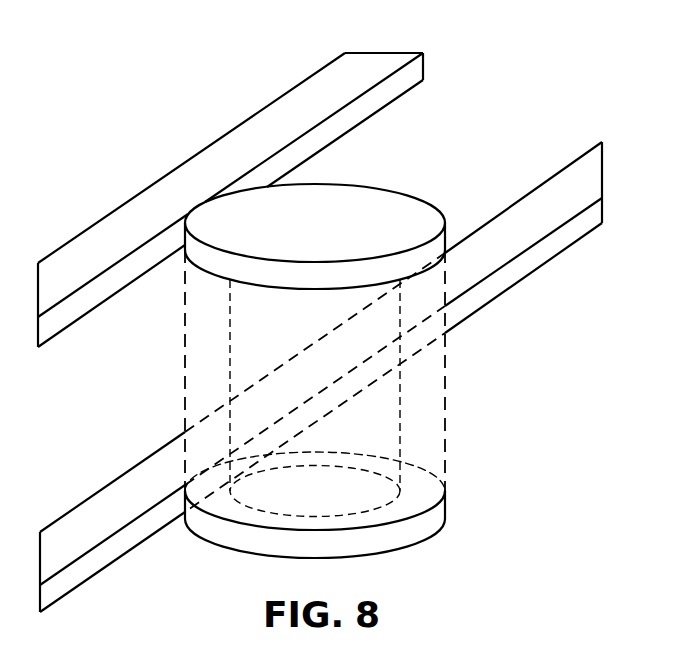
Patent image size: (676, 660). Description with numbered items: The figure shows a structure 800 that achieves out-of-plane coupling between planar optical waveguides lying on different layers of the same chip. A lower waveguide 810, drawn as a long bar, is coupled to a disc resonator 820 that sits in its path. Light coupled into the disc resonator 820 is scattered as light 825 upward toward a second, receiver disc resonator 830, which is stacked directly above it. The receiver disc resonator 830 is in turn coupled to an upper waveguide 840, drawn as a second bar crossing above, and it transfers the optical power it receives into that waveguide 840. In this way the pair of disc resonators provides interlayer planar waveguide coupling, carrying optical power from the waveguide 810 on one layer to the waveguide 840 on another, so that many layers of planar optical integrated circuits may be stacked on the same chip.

The structure 800 is at (213, 63).
The waveguide 810 is at (523, 277).
The disc resonator 820 is at (447, 515).
The light 825 is at (447, 383).
The receiver disc resonator 830 is at (378, 187).
The waveguide 840 is at (193, 155).